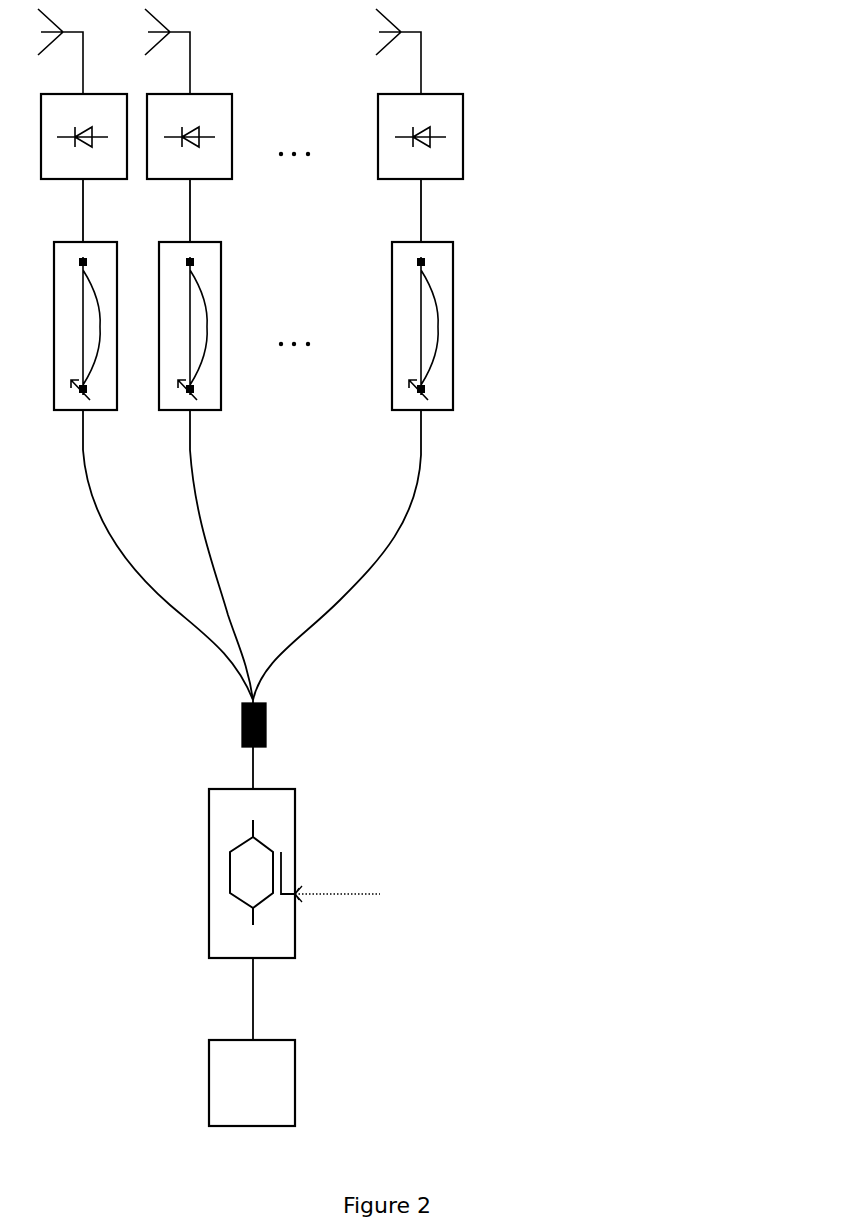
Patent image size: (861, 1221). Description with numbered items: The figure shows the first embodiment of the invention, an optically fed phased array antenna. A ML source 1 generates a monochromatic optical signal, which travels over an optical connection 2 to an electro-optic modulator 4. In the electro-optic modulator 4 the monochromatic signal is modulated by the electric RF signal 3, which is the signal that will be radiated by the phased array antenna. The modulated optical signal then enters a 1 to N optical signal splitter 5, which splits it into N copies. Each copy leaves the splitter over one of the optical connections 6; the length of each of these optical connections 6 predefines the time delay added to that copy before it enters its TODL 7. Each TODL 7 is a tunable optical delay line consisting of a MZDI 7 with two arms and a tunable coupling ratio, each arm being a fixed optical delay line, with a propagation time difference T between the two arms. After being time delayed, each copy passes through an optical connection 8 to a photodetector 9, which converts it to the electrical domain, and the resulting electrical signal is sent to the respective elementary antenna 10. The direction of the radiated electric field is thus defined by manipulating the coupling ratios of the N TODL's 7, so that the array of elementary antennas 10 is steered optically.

The ML source 1 is at (327, 1083).
The optical connection 2 is at (285, 999).
The electric RF signal 3 is at (412, 894).
The electro-optic modulator 4 is at (329, 809).
The 1 to N optical signal splitter 5 is at (307, 725).
The optical connections 6 is at (414, 557).
The TODL based on MZDI 7 is at (722, 325).
The optical connection 8 is at (455, 210).
The photodetector 9 is at (722, 137).
The elementary antenna 10 is at (454, 32).